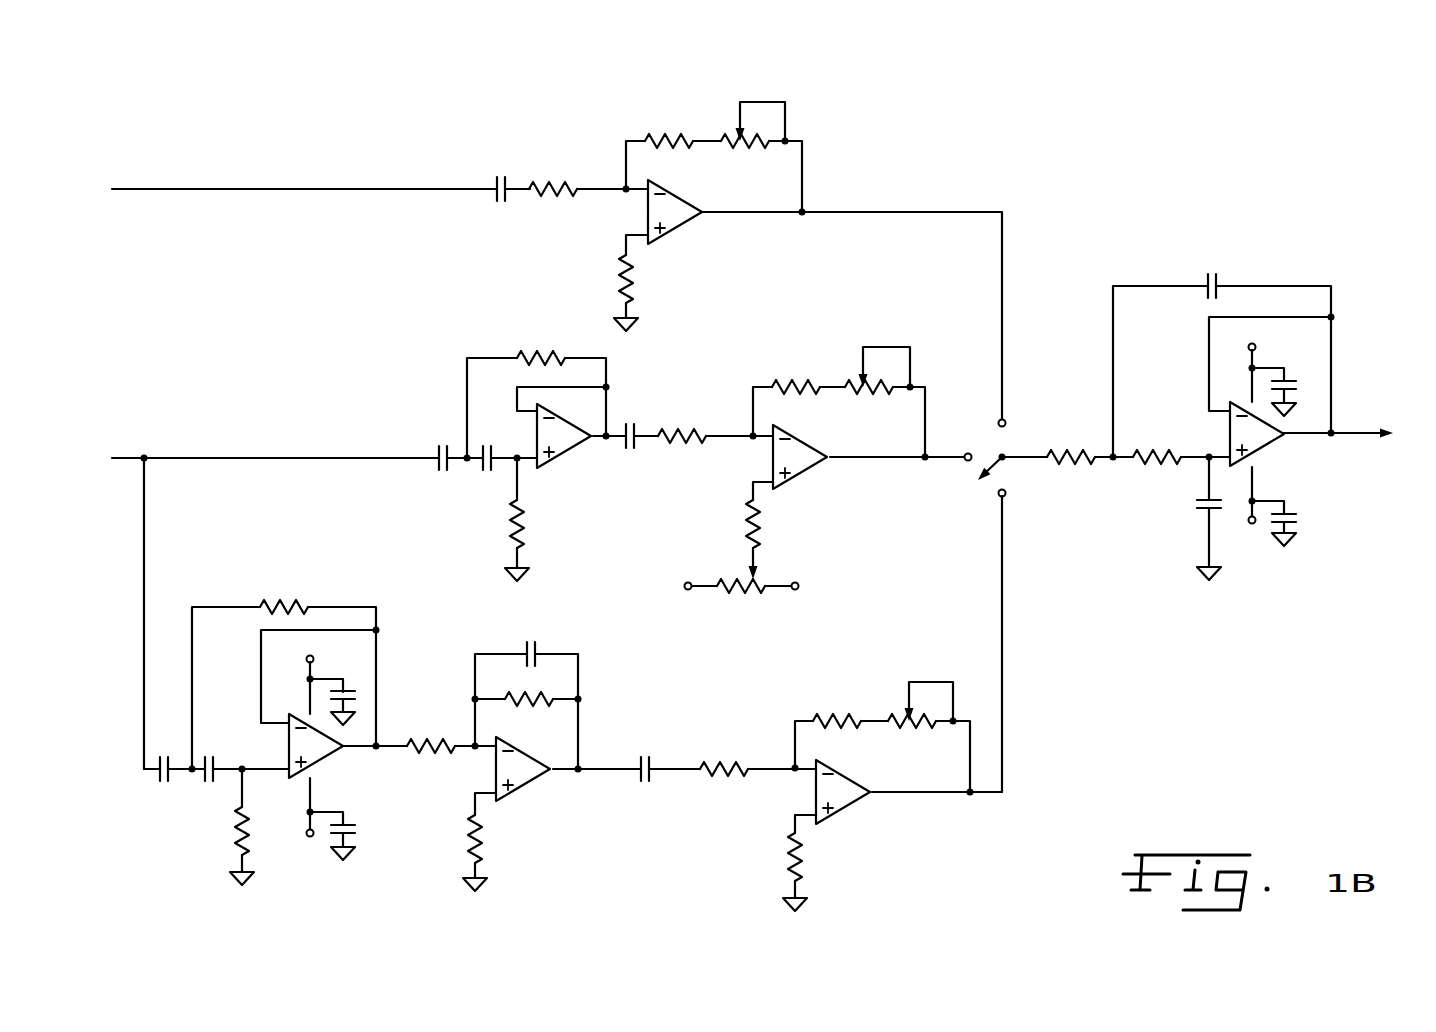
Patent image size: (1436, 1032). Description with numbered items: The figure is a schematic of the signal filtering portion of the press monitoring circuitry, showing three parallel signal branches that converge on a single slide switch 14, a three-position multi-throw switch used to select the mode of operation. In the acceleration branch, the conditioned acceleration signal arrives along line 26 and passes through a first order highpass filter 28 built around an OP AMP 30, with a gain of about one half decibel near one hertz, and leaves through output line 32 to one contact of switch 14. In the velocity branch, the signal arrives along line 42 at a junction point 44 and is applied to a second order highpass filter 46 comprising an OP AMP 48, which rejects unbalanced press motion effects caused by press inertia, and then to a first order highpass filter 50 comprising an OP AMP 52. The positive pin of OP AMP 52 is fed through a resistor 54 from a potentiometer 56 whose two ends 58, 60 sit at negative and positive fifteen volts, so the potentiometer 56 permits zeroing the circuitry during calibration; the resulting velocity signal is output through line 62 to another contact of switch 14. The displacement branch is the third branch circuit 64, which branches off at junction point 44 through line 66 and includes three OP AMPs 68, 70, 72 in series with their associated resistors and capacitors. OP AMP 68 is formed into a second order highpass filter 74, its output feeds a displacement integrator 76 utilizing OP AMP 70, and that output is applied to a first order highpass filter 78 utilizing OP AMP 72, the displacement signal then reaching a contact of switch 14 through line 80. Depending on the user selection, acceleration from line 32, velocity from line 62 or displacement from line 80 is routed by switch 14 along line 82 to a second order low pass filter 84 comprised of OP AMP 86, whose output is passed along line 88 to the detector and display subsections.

The slide switch 14 is at (1004, 460).
The line 26 is at (229, 189).
The first order highpass filter 28 is at (832, 184).
The OP AMP 30 is at (683, 200).
The output line 32 is at (1002, 240).
The line 42 is at (130, 458).
The junction point 44 is at (146, 460).
The second order highpass filter 46 is at (471, 338).
The OP AMP 48 is at (567, 443).
The first order highpass filter 50 is at (822, 355).
The OP AMP 52 is at (805, 442).
The resistor 54 is at (752, 522).
The potentiometer 56 is at (757, 575).
The end 58 is at (684, 586).
The end 60 is at (799, 586).
The line 62 is at (948, 456).
The third branch circuit 64 is at (1038, 777).
The line 66 is at (146, 548).
The OP AMP 68 is at (317, 755).
The OP AMP 70 is at (525, 783).
The OP AMP 72 is at (845, 780).
The second-order high-pass filter 74 is at (405, 607).
The displacement integrator 76 is at (611, 692).
The first order highpass filter 78 is at (855, 696).
The line 80 is at (1002, 605).
The line 82 is at (1027, 457).
The second order low pass filter 84 is at (1357, 271).
The OP AMP 86 is at (1262, 447).
The line 88 is at (1358, 432).